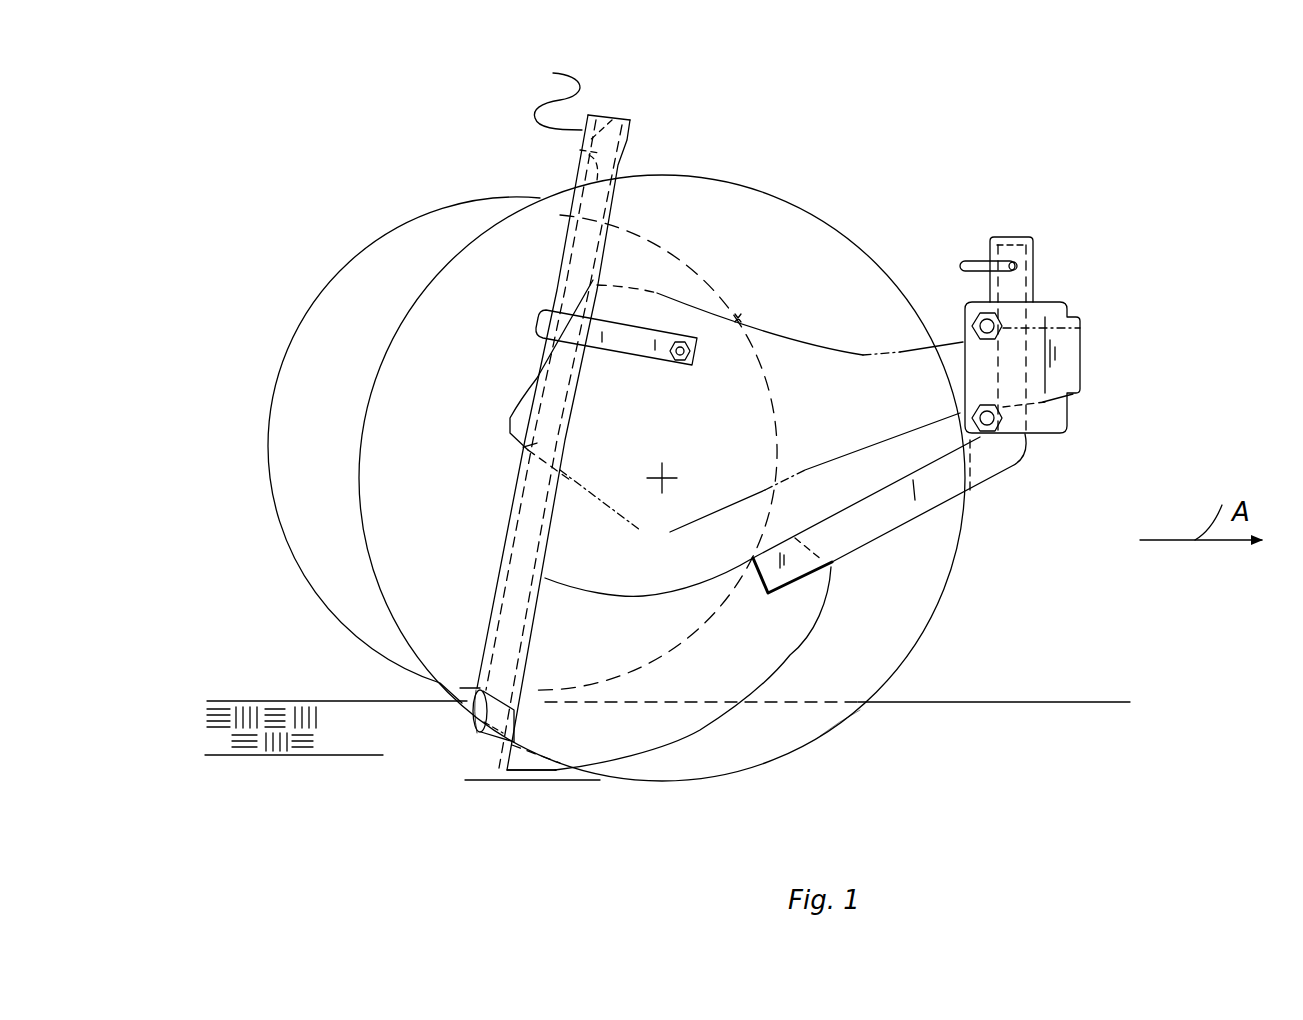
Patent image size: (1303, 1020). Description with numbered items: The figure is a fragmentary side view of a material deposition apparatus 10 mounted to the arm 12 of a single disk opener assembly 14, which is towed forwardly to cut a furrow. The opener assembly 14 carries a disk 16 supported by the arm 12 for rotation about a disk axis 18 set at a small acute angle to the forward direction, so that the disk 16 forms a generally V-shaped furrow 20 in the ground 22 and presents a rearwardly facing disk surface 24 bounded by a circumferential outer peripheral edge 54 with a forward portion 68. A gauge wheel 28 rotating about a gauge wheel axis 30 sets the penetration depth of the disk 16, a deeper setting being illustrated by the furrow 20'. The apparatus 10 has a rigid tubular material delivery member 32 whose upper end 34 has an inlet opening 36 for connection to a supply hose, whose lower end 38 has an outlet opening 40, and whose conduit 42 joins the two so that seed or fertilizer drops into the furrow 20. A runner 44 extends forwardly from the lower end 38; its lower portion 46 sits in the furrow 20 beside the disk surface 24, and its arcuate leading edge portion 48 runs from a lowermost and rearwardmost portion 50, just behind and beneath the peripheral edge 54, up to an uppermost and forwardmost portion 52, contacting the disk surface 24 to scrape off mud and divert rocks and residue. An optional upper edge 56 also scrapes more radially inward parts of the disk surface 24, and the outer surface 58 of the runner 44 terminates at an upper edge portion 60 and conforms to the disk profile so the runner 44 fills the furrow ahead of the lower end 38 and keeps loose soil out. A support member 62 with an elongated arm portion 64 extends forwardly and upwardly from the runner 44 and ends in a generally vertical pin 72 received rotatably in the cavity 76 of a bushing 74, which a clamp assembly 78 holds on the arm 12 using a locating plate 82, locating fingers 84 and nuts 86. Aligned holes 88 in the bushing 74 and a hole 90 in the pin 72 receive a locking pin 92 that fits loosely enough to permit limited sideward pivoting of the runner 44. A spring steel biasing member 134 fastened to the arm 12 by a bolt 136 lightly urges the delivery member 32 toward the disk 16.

The material deposition apparatus 10 is at (840, 604).
The arm 12 is at (1082, 397).
The opener assembly 14 is at (1110, 315).
The disk 16 is at (810, 200).
The disk axis 18 is at (668, 477).
The furrow 20 is at (525, 803).
The furrow 20' is at (294, 755).
The ground 22 is at (233, 700).
The rearwardly facing disk surface 24 is at (737, 197).
The gauge wheel 28 is at (327, 287).
The gauge wheel axis 30 is at (522, 450).
The material delivery member 32 is at (632, 138).
The upper end 34 is at (550, 94).
The inlet opening 36 is at (617, 113).
The lower end 38 is at (467, 707).
The outlet opening 40 is at (478, 731).
The conduit 42 is at (580, 153).
The runner 44 is at (728, 724).
The lower portion 46 is at (645, 750).
The leading edge portion 48 is at (807, 630).
The lowermost and rearwardmost portion 50 is at (540, 772).
The uppermost and forwardmost portion 52 is at (835, 568).
The outer peripheral edge 54 is at (820, 736).
The upper edge 56 is at (770, 527).
The outer surface 58 is at (770, 656).
The upper edge portion 60 is at (597, 578).
The support member 62 is at (924, 520).
The elongated arm portion 64 is at (895, 525).
The forward portion 68 is at (975, 514).
The pin 72 is at (1082, 373).
The bushing 74 is at (1035, 273).
The cavity 76 is at (1018, 237).
The clamp assembly 78 is at (1060, 448).
The locating plate 82 is at (1085, 360).
The locating fingers 84 is at (1073, 307).
The nuts 86 is at (967, 321).
The aligned holes 88 is at (1015, 265).
The hole 90 is at (1035, 267).
The locking pin 92 is at (960, 265).
The biasing member 134 is at (636, 364).
The bolt 136 is at (693, 367).